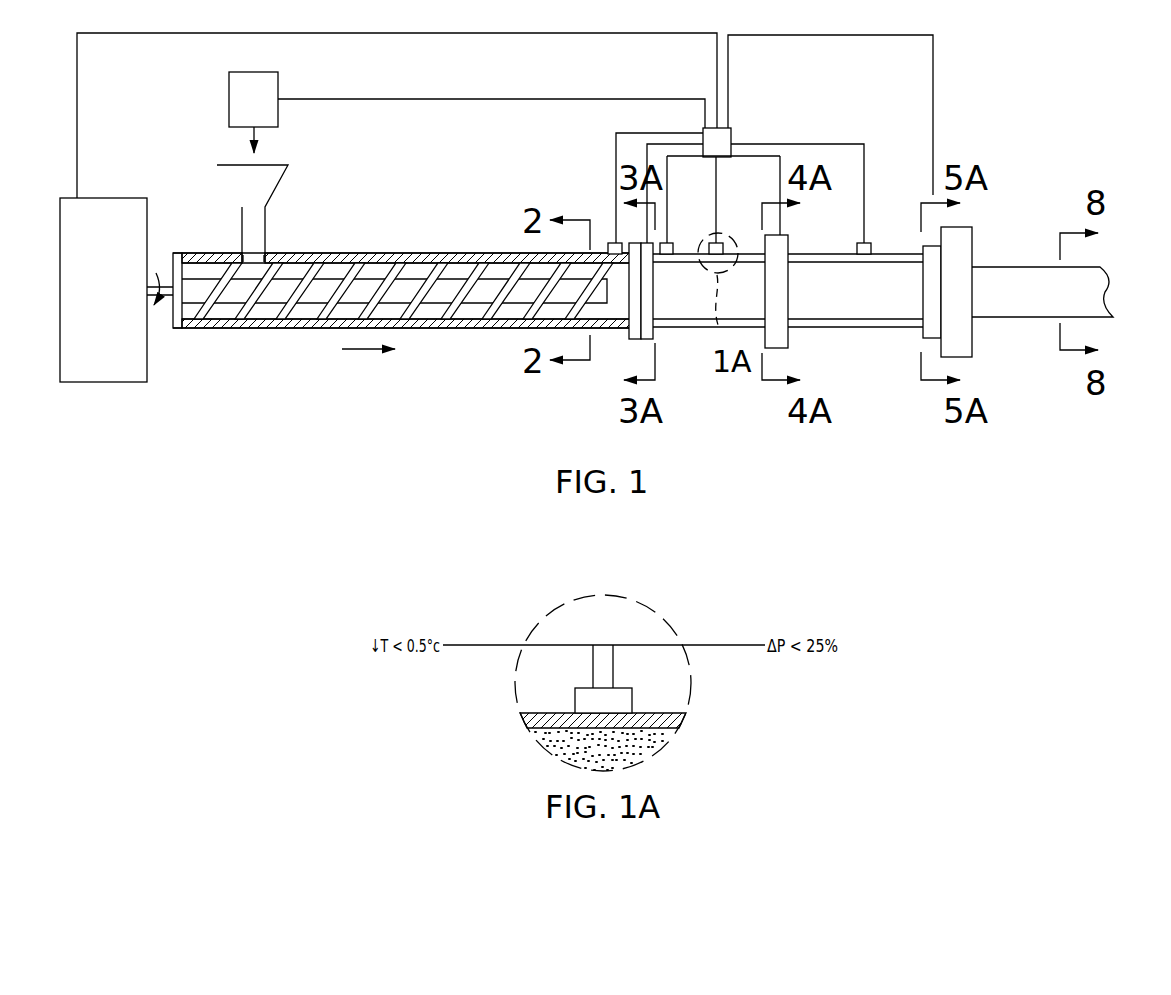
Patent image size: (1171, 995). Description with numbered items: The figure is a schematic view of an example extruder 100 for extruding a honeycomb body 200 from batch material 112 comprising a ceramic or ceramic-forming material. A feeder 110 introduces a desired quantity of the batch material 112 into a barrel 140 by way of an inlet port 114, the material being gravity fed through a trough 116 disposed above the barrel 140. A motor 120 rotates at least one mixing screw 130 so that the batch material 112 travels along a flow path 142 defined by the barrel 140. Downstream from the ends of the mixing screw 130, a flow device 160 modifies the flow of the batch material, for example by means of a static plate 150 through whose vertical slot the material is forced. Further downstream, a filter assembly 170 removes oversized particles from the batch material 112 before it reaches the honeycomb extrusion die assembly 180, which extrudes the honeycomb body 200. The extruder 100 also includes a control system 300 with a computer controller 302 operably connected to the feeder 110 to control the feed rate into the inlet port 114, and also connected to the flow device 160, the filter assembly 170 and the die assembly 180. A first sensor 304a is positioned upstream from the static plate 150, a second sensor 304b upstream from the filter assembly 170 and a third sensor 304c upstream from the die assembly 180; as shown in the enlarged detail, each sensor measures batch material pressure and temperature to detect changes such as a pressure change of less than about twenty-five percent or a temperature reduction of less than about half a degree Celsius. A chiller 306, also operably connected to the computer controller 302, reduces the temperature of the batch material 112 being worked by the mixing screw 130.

In FIG. 1, the extruder 100 is at (401, 268).
In FIG. 1, the feeder 110 is at (278, 80).
In FIG. 1, the batch material 112 is at (256, 140).
In FIG. 1, the inlet port 114 is at (254, 260).
In FIG. 1, the trough 116 is at (231, 191).
In FIG. 1, the motor 120 is at (118, 198).
In FIG. 1, the mixing screw 130 is at (262, 303).
In FIG. 1, the barrel 140 is at (408, 253).
In FIG. 1, the flow path 142 is at (358, 352).
In FIG. 1, the static plate 150 is at (636, 340).
In FIG. 1, the flow device 160 is at (652, 340).
In FIG. 1, the filter assembly 170 is at (788, 305).
In FIG. 1, the honeycomb extrusion die assembly 180 is at (923, 278).
In FIG. 1, the honeycomb body 200 is at (1015, 267).
In FIG. 1, the control system 300 is at (755, 108).
In FIG. 1, the computer controller 302 is at (731, 136).
In FIG. 1, the first sensor 304a is at (615, 243).
In FIG. 1, the second sensor 304b is at (716, 243).
In FIG. 1A, the second sensor 304b is at (632, 703).
In FIG. 1, the third sensor 304c is at (864, 243).
In FIG. 1, the chiller 306 is at (666, 243).